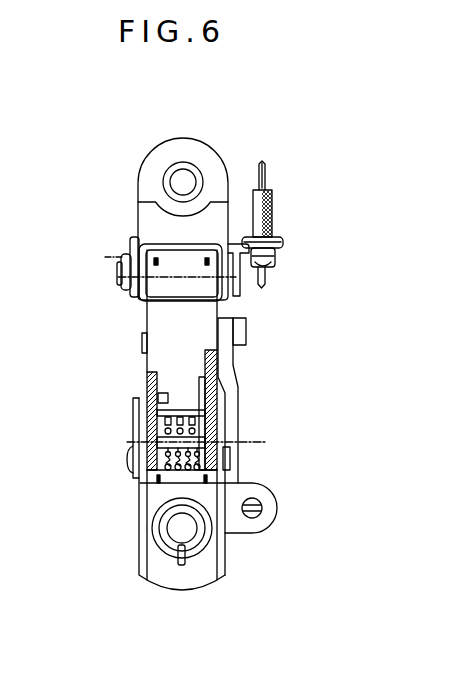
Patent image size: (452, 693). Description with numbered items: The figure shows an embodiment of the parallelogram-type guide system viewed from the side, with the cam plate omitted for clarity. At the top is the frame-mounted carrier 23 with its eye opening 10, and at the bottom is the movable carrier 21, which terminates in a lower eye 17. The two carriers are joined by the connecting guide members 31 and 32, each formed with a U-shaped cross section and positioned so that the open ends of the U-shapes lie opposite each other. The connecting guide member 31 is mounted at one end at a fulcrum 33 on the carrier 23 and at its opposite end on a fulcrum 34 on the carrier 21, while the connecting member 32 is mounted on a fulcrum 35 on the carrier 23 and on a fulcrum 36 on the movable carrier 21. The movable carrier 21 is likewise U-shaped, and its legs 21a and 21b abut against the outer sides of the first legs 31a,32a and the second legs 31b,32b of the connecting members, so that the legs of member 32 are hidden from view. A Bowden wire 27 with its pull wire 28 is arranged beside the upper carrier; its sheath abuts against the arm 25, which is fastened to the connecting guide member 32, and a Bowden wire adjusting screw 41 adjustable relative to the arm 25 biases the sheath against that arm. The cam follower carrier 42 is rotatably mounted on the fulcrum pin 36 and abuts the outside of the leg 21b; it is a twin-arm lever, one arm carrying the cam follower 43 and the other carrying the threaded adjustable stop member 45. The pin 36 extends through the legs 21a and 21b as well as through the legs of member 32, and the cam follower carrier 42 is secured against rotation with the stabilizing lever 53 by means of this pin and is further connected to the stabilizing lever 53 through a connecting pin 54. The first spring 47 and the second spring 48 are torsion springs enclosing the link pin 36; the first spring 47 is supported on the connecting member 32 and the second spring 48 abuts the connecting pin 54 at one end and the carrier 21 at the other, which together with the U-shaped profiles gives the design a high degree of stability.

The eye opening 10 is at (183, 179).
The lower eye / pivot 17 is at (186, 532).
The movable carrier 21 is at (176, 583).
The leg of movable carrier 21a is at (143, 569).
The leg of movable carrier 21b is at (224, 558).
The frame-mounted carrier 23 is at (138, 177).
The arm 25 is at (283, 243).
The Bowden wire 27 is at (276, 197).
The pull wire 28 is at (262, 172).
The connecting guide member 31 is at (165, 308).
The legs of connecting members 31a,32a is at (150, 428).
The legs of connecting members 31b,32b is at (213, 402).
The connecting guide member 32 is at (150, 380).
The fulcrum 33 is at (128, 278).
The fulcrum 34 is at (127, 465).
The fulcrum 35 is at (110, 257).
The fulcrum pin 36 is at (262, 442).
The Bowden wire adjusting screw 41 is at (276, 262).
The cam follower carrier 42 is at (226, 357).
The cam follower 43 is at (246, 325).
The adjustable stop member 45 is at (247, 502).
The first spring 47 is at (200, 383).
The second spring 48 is at (185, 452).
The stabilizing lever 53 is at (152, 405).
The connecting pin 54 is at (180, 410).